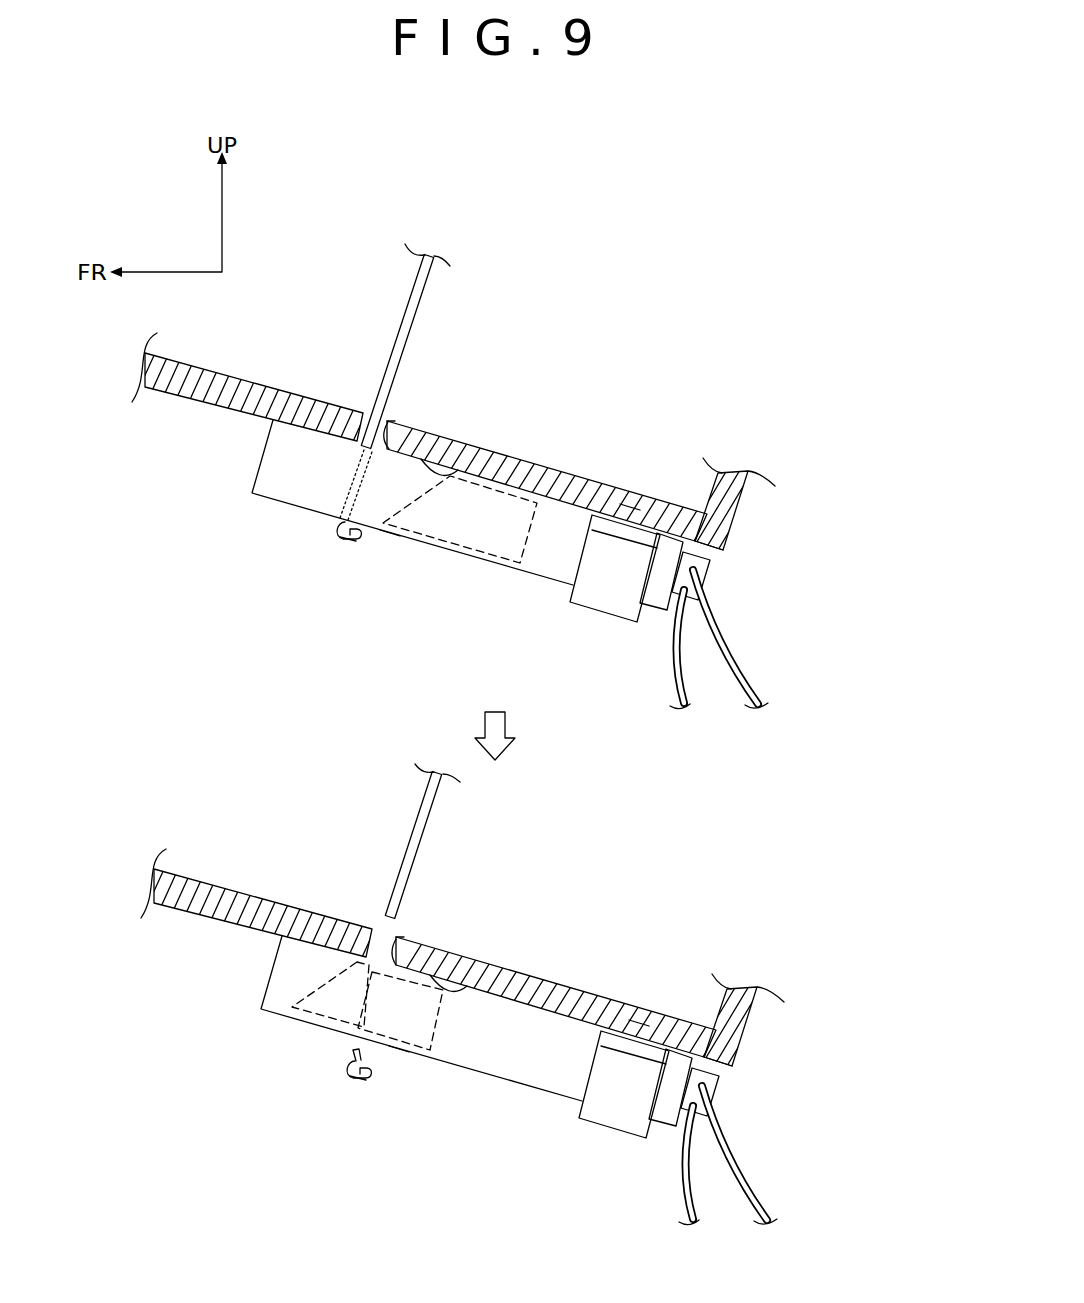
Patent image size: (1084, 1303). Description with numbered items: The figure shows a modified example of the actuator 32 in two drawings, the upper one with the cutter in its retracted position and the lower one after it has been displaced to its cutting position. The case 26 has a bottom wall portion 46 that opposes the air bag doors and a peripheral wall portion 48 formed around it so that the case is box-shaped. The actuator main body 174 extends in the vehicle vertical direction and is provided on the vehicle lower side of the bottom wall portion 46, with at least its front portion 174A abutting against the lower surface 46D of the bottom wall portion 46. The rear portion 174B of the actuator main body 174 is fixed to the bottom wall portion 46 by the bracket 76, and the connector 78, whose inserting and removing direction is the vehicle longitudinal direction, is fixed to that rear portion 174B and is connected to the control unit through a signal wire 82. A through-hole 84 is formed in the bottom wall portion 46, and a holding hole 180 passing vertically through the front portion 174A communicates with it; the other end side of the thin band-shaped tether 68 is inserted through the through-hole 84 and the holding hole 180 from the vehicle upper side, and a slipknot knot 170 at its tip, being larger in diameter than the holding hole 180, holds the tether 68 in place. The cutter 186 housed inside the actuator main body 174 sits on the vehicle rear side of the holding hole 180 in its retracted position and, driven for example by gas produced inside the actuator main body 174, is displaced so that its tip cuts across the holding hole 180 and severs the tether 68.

The case 26 is at (742, 528).
The actuator 32 is at (493, 593).
The bottom wall portion 46 is at (253, 382).
The lower surface 46D is at (456, 466).
The peripheral wall portion 48 is at (740, 500).
The tether 68 is at (391, 362).
The bracket 76 is at (598, 612).
The connector 78 is at (708, 575).
The signal wire 82 is at (740, 667).
The through-hole 84 is at (385, 423).
The knot 170 is at (347, 542).
The actuator main body 174 is at (393, 537).
The front portion 174A is at (389, 422).
The rear portion 174B is at (630, 520).
The holding hole 180 is at (343, 507).
The cutter 186 is at (465, 548).